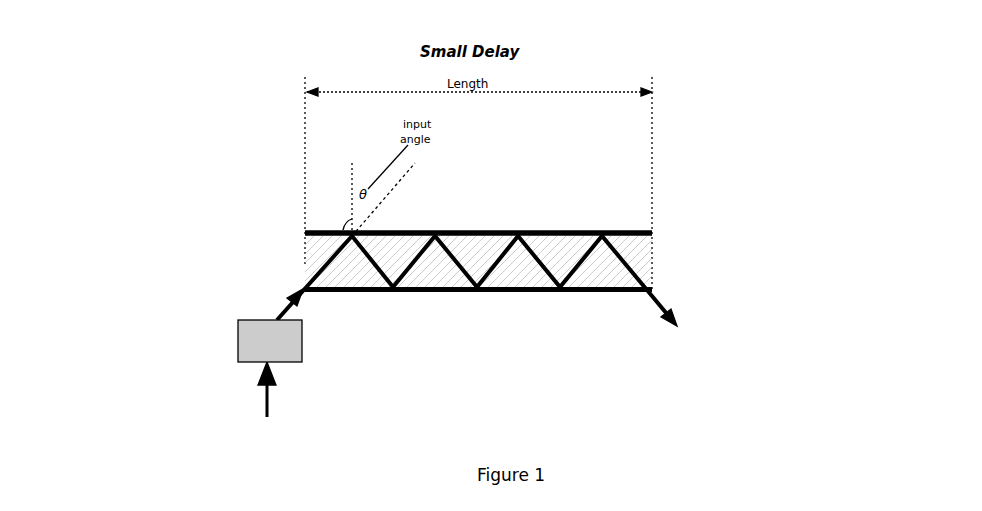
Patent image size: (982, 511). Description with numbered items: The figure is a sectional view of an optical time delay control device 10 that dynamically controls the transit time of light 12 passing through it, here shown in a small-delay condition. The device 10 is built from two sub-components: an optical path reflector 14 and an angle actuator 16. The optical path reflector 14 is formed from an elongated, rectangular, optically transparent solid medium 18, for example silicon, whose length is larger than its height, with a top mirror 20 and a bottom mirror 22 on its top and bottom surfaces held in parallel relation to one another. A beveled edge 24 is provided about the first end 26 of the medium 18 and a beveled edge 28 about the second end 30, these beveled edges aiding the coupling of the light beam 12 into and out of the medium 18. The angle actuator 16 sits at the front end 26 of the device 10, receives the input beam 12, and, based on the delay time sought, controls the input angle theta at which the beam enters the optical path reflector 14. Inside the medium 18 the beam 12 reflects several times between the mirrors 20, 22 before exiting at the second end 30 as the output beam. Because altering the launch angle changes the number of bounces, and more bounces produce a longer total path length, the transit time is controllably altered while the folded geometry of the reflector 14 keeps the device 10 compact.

The optical time delay control device 10 is at (83, 344).
The light beam 12 is at (712, 283).
The optical path reflector 14 is at (296, 253).
The angle actuator 16 is at (282, 347).
The optically transparent solid medium 18 is at (650, 258).
The top mirror 20 is at (553, 292).
The bottom mirror 22 is at (484, 230).
The beveled edge 24 is at (316, 288).
The first end 26 is at (247, 285).
The beveled edge 28 is at (655, 283).
The second end 30 is at (632, 310).